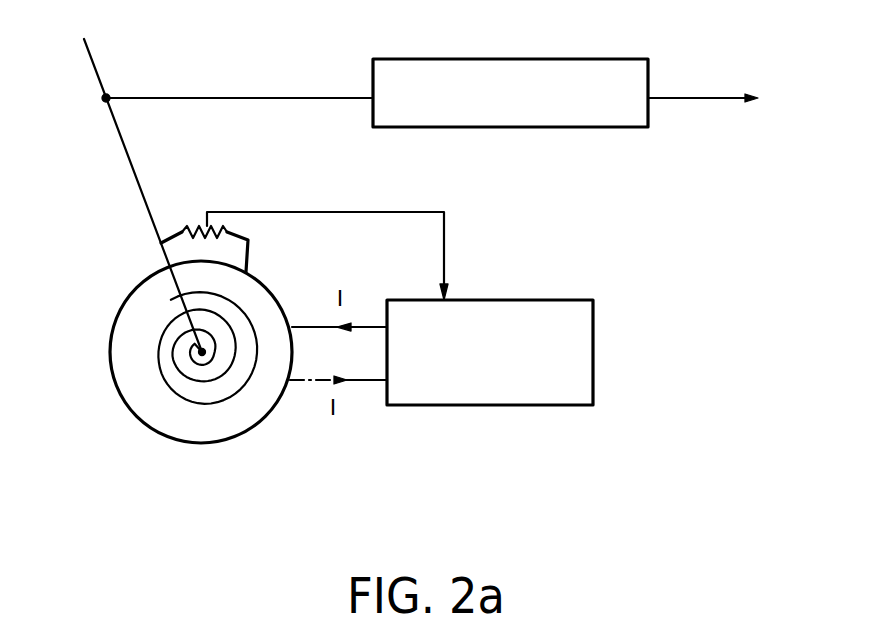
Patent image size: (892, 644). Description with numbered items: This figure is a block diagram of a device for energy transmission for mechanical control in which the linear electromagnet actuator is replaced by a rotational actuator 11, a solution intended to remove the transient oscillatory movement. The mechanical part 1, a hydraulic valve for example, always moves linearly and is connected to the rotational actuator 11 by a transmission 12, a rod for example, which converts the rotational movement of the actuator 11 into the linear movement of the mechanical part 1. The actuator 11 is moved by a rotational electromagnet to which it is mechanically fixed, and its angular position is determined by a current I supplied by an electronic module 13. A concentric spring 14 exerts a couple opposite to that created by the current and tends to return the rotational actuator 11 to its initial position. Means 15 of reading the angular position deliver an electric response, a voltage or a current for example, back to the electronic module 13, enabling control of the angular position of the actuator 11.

The mechanical part 1 is at (500, 59).
The rotational actuator 11 is at (132, 413).
The transmission 12 is at (138, 180).
The electronic module 13 is at (537, 300).
The concentric spring 14 is at (240, 389).
The means of reading the angular position 15 is at (190, 224).